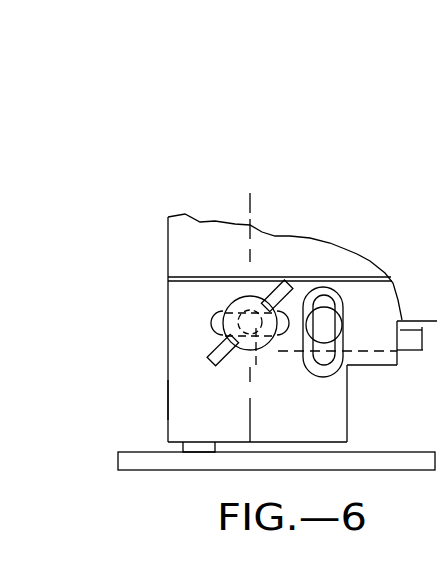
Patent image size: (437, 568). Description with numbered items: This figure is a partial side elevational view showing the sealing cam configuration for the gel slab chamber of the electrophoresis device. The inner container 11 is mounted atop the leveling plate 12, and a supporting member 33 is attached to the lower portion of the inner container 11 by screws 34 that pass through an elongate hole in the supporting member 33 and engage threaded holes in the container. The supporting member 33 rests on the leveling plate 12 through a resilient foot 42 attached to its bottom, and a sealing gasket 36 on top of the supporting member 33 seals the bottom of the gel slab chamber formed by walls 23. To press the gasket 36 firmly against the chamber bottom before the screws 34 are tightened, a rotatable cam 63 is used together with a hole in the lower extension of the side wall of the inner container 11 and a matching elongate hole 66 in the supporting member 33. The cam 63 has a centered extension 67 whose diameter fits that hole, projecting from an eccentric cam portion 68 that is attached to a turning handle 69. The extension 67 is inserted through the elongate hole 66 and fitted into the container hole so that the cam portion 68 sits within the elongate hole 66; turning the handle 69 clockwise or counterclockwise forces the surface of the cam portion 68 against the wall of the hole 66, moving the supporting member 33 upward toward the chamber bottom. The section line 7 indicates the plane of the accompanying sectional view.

The inner container 11 is at (263, 328).
The leveling plate 12 is at (404, 452).
The section line 7- 7 is at (222, 210).
The wall 23 is at (312, 565).
The supporting member 33 is at (168, 396).
The screw 34 is at (337, 328).
The sealing gasket 36 is at (168, 279).
The resilient foot 42 is at (183, 446).
The rotatable cam 63 is at (215, 328).
The elongate hole 66 is at (212, 318).
The centered extension 67 is at (258, 357).
The eccentric cam portion 68 is at (227, 337).
The turning handle 69 is at (282, 288).